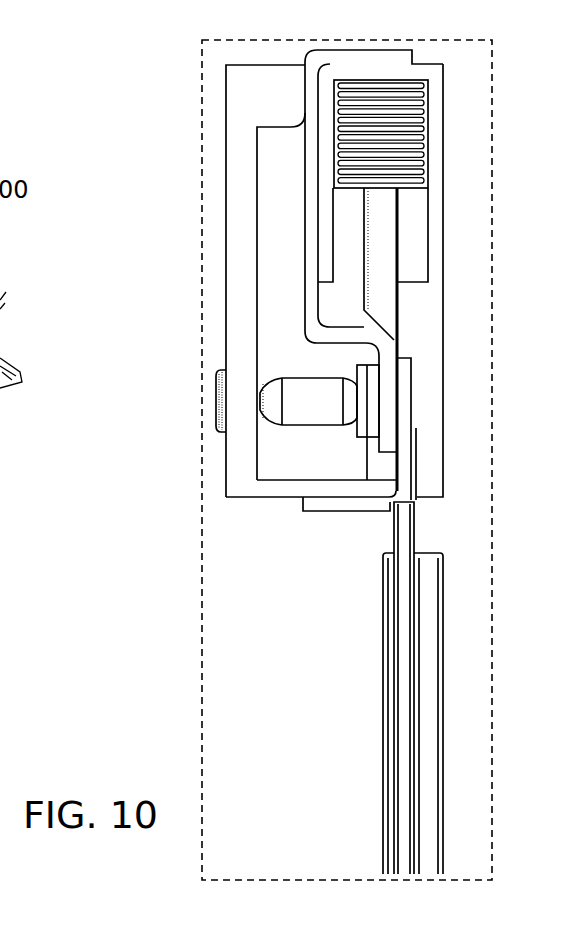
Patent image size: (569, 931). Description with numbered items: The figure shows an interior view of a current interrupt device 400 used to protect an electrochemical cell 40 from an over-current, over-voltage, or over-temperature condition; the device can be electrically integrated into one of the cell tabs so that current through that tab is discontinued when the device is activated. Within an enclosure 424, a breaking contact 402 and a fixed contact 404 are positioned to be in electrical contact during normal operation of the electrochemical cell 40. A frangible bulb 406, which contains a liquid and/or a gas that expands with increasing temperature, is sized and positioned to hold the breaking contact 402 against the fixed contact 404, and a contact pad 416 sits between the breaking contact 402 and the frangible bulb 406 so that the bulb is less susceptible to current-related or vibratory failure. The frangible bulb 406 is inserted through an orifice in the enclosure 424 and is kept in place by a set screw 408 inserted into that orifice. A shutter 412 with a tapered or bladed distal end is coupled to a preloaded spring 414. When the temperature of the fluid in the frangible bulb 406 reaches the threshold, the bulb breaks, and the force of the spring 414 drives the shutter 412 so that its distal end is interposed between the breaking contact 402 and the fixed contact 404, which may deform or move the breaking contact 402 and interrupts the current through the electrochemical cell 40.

The current interrupt device 400 is at (172, 58).
The breaking contact 402 is at (315, 160).
The fixed contact 404 is at (407, 408).
The frangible bulb 406 is at (282, 378).
The set screw 408 is at (216, 399).
The shutter 412 is at (390, 257).
The spring 414 is at (429, 115).
The contact pad 416 is at (370, 377).
The enclosure 424 is at (437, 333).
The electrochemical cell 40 is at (360, 605).